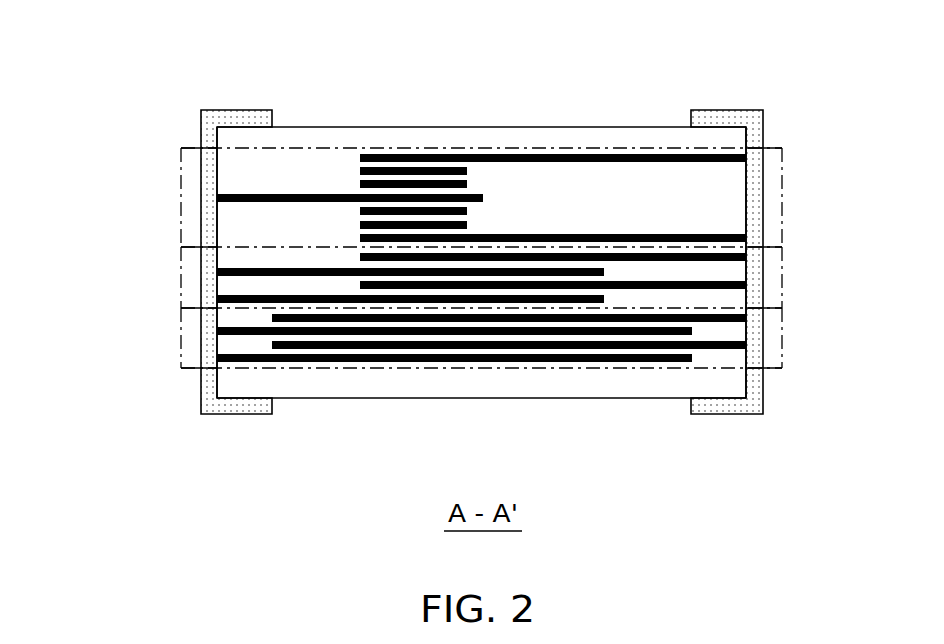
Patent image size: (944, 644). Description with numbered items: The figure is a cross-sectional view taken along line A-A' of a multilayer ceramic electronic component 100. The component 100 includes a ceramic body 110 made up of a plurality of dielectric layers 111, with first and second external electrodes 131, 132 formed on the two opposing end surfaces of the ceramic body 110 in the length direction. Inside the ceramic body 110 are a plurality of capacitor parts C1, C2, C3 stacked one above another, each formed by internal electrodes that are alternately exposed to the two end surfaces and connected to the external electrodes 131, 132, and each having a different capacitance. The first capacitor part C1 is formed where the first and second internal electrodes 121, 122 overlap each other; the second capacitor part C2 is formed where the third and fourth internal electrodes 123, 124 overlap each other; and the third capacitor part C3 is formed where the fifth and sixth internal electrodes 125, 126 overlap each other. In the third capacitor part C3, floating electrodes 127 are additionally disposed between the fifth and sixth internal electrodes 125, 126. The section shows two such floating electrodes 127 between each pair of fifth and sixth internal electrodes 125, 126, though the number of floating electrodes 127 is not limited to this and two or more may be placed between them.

The multilayer ceramic electronic component 100 is at (177, 44).
The ceramic body 110 is at (561, 114).
The dielectric layer 111 is at (483, 138).
The first internal electrode 121 is at (483, 363).
The second internal electrode 122 is at (708, 348).
The third internal electrode 123 is at (243, 293).
The fourth internal electrode 124 is at (717, 261).
The fifth internal electrode 125 is at (298, 196).
The sixth internal electrode 126 is at (708, 162).
The floating electrode 127 is at (360, 171).
The first external electrode 131 is at (236, 408).
The second external electrode 132 is at (727, 408).
The first capacitor part C1 is at (182, 325).
The second capacitor part C2 is at (182, 268).
The third capacitor part C3 is at (182, 167).